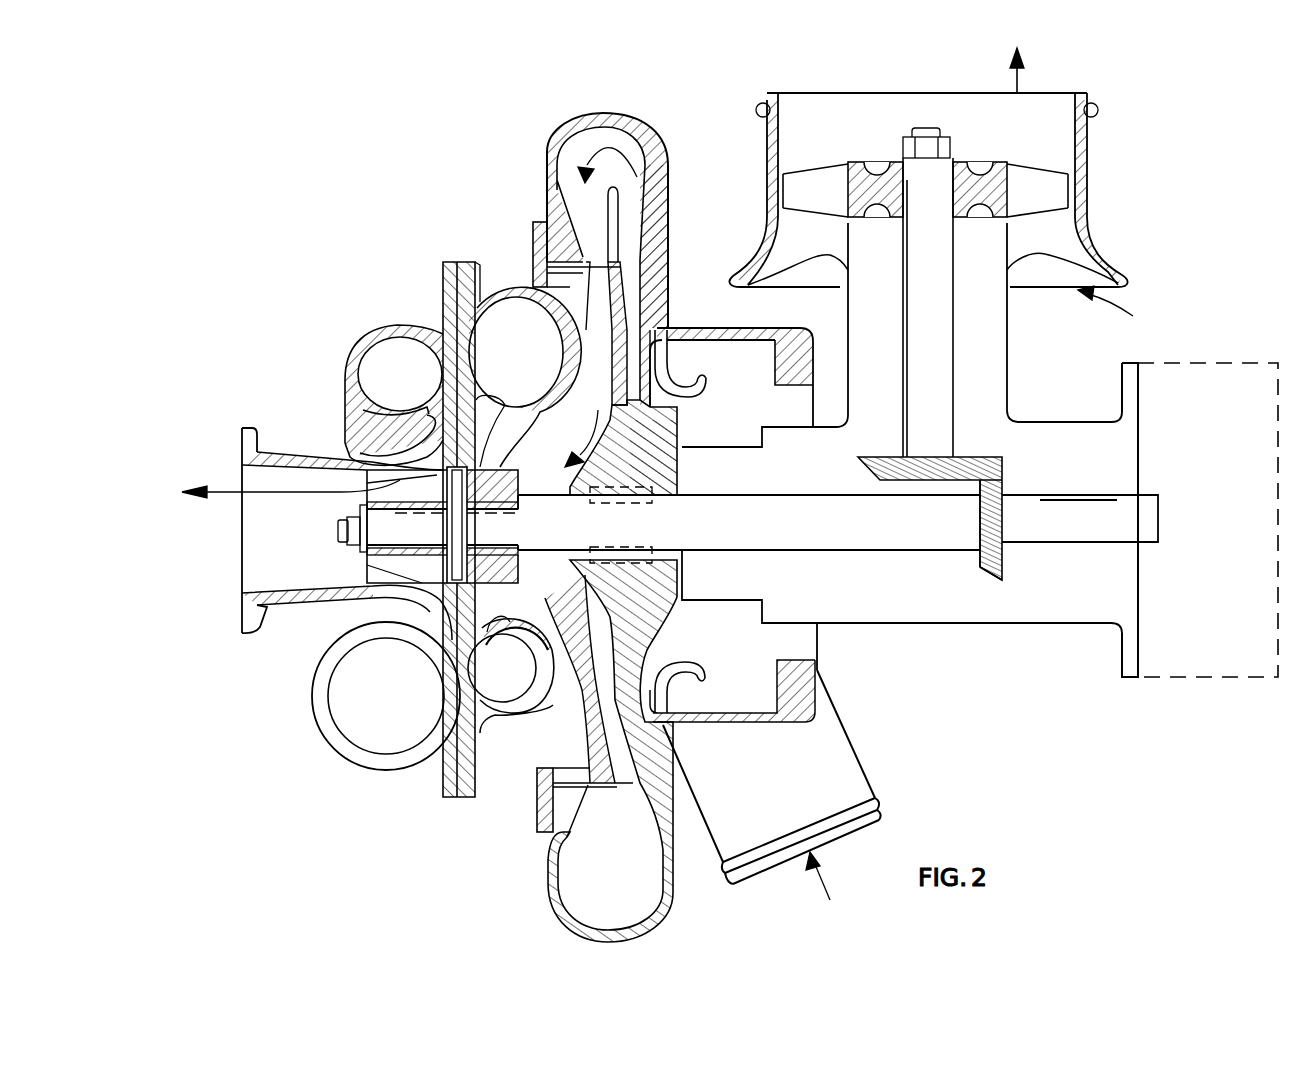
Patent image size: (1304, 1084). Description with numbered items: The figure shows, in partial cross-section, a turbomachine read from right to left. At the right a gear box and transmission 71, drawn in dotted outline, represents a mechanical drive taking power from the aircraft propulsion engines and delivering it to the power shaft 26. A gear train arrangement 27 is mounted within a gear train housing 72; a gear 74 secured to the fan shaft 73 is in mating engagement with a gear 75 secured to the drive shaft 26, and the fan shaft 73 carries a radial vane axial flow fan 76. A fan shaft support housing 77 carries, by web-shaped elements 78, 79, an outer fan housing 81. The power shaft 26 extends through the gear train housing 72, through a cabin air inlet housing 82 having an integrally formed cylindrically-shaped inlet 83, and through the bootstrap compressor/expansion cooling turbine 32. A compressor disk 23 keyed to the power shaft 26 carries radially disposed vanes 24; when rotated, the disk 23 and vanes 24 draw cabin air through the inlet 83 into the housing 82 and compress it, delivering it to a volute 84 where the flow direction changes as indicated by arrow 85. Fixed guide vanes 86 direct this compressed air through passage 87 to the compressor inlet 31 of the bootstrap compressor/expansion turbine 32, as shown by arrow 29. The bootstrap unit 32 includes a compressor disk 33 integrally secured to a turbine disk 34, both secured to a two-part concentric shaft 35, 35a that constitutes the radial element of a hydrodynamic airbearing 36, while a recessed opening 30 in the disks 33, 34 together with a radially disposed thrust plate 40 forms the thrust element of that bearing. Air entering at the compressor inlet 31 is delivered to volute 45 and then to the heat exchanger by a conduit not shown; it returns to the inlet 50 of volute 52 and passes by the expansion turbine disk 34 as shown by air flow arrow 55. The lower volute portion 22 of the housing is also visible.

The housing lower volute portion 22 is at (675, 888).
The compressor disk 23 is at (618, 350).
The vanes 24 is at (650, 387).
The power shaft 26 is at (1145, 517).
The gear train arrangement 27 is at (963, 575).
The arrow 29 is at (593, 427).
The recessed opening 30 is at (447, 487).
The compressor inlet 31 is at (540, 492).
The bootstrap compressor/expansion cooling turbine 32 is at (402, 312).
The compressor disk 33 is at (523, 508).
The turbine disk 34 is at (467, 548).
The two-part concentric shaft 35 is at (392, 505).
The two-part concentric shaft 35a is at (455, 558).
The hydrodynamic airbearing 36 is at (430, 483).
The thrust plate 40 is at (477, 415).
The volute 45 is at (515, 293).
The inlet 50 is at (347, 710).
The volute 52 is at (323, 677).
The air flow arrow 55 is at (213, 483).
The gear box and transmission 71 is at (1193, 360).
The gear train housing 72 is at (1060, 627).
The fan shaft 73 is at (948, 352).
The gear 74 is at (985, 455).
The gear 75 is at (1000, 492).
The radial vane axial flow fan 76 is at (997, 183).
The fan shaft support housing 77 is at (1008, 303).
The web-shaped element 78 is at (1070, 243).
The web-shaped element 79 is at (797, 243).
The outer fan housing 81 is at (1090, 186).
The cabin air inlet housing 82 is at (745, 623).
The cylindrically-shaped inlet 83 is at (853, 763).
The volute 84 is at (627, 125).
The arrow 85 is at (603, 142).
The fixed guide vanes 86 is at (567, 165).
The passage 87 is at (590, 277).